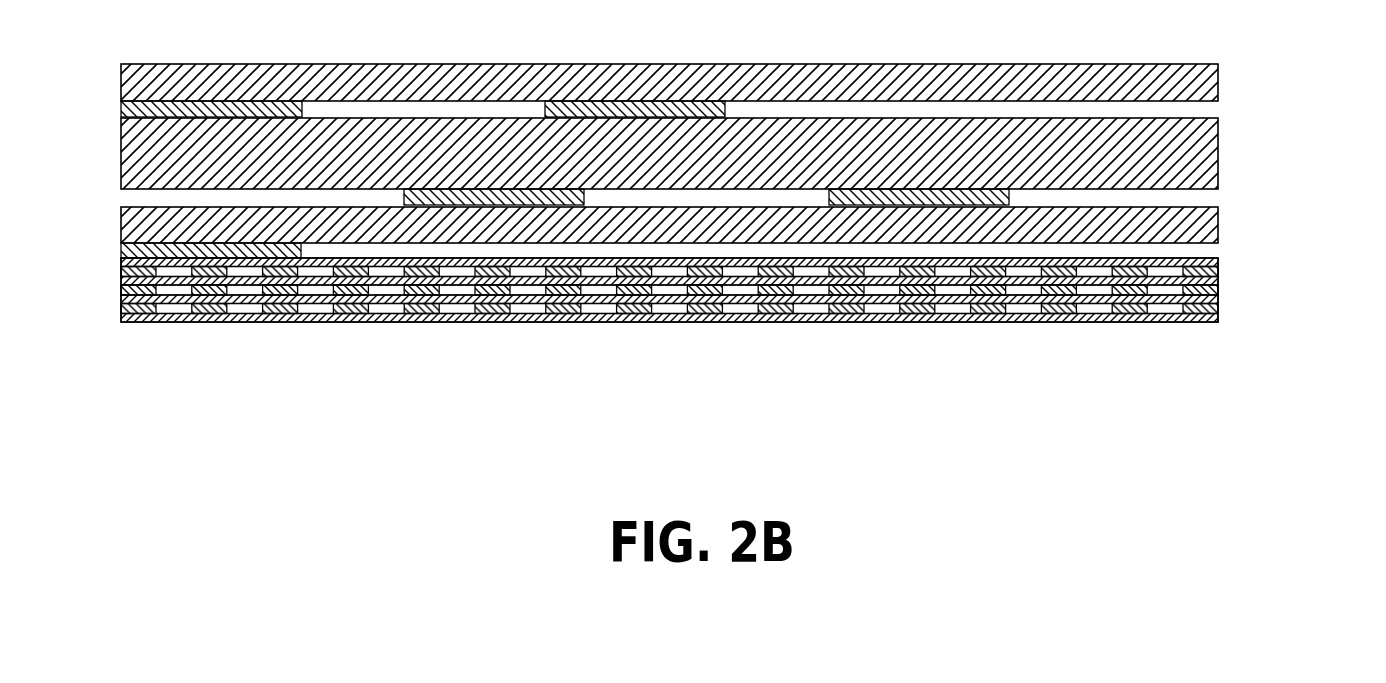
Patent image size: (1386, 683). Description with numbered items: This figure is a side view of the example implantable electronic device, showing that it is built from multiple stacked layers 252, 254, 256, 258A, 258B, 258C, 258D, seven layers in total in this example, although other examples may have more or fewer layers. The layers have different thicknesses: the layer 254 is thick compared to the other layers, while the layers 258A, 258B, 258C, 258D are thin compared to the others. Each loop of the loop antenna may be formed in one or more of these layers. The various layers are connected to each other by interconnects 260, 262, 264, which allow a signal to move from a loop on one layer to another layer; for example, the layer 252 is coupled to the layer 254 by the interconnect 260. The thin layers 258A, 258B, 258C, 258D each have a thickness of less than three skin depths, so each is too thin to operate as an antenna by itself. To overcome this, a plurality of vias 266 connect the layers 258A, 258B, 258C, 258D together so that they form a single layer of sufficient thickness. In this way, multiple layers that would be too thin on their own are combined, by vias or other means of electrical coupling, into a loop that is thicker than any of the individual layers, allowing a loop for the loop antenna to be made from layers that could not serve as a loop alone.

The layer 252 is at (1218, 71).
The layer 254 is at (1218, 138).
The layer 256 is at (1218, 213).
The layer 258A is at (1218, 263).
The layer 258B is at (1220, 280).
The layer 258C is at (1232, 298).
The layer 258D is at (1220, 322).
The interconnect 260 is at (242, 101).
The interconnect 262 is at (487, 189).
The interconnect 264 is at (118, 247).
The vias 266 is at (711, 305).